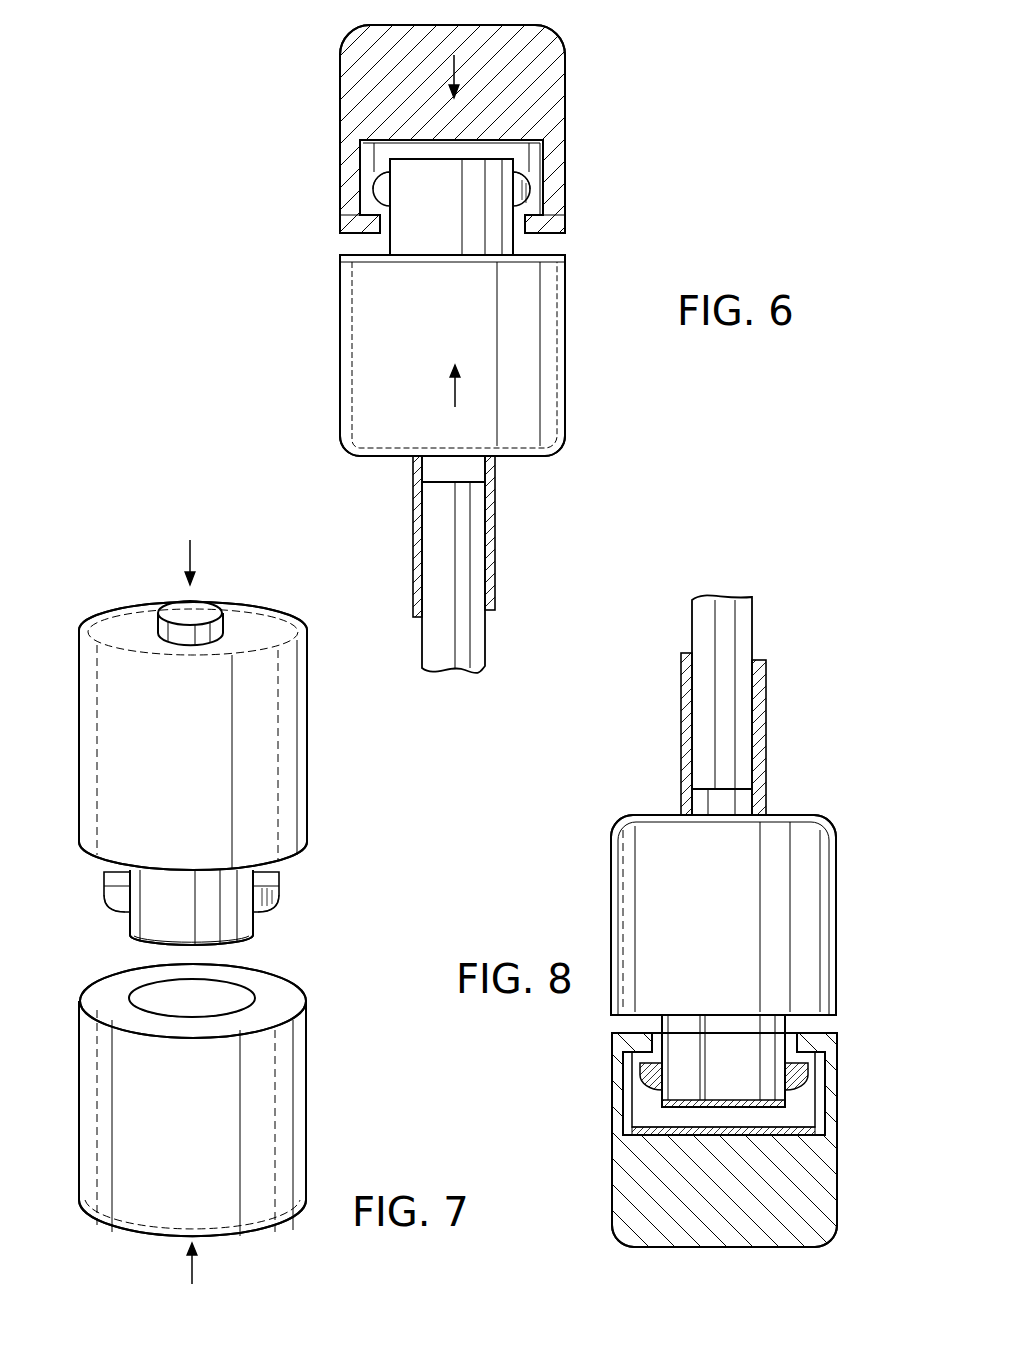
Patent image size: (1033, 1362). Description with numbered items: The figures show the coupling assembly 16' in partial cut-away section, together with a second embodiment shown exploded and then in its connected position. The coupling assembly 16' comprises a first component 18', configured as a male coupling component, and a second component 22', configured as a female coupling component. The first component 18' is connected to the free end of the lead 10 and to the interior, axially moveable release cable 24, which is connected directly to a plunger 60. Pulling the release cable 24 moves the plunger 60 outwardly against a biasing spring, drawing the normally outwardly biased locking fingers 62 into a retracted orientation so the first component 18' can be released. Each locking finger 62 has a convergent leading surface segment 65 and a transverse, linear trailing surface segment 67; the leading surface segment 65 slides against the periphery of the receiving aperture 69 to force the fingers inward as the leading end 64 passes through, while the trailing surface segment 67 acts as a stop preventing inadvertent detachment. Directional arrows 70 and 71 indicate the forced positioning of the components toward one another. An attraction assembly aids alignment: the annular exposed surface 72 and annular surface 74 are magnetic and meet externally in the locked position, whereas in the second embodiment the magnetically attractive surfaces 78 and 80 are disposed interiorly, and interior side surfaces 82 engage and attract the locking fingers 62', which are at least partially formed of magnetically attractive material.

In FIG. 6, the lead 10 is at (495, 533).
In FIG. 8, the lead 10 is at (766, 741).
In FIG. 6, the coupling assembly 16' is at (381, 236).
In FIG. 6, the first component 18' is at (500, 355).
In FIG. 7, the first component 18' is at (234, 736).
In FIG. 8, the first component 18' is at (676, 915).
In FIG. 6, the second component 22' is at (499, 129).
In FIG. 7, the second component 22' is at (238, 1100).
In FIG. 8, the second component 22' is at (677, 1140).
In FIG. 6, the release cable 24 is at (470, 655).
In FIG. 8, the release cable 24 is at (722, 620).
In FIG. 6, the plunger 60 is at (437, 470).
In FIG. 7, the plunger 60 is at (203, 603).
In FIG. 8, the plunger 60 is at (698, 788).
In FIG. 6, the locking fingers 62 is at (445, 183).
In FIG. 7, the locking fingers 62 is at (195, 892).
In FIG. 8, the locking fingers 62' is at (716, 1058).
In FIG. 6, the leading end 64 is at (418, 158).
In FIG. 7, the leading end 64 is at (141, 912).
In FIG. 8, the leading end 64 is at (685, 1105).
In FIG. 6, the leading surface segment 65 is at (378, 182).
In FIG. 7, the leading surface segment 65 is at (125, 914).
In FIG. 6, the trailing surface segment 67 is at (370, 218).
In FIG. 7, the trailing surface segment 67 is at (116, 879).
In FIG. 6, the receiving aperture 69 is at (392, 220).
In FIG. 7, the receiving aperture 69 is at (245, 979).
In FIG. 6, the directional arrow 70 is at (450, 80).
In FIG. 7, the directional arrow 70 is at (185, 558).
In FIG. 6, the directional arrow 71 is at (452, 392).
In FIG. 7, the directional arrow 71 is at (185, 1261).
In FIG. 6, the exposed surface 72 is at (552, 257).
In FIG. 6, the annular surface 74 is at (357, 230).
In FIG. 7, the magnetically attractive surface 78 is at (238, 944).
In FIG. 8, the magnetically attractive surface 78 is at (703, 1102).
In FIG. 8, the magnetically attractive surface 80 is at (652, 1133).
In FIG. 8, the interior side surfaces 82 is at (627, 1105).